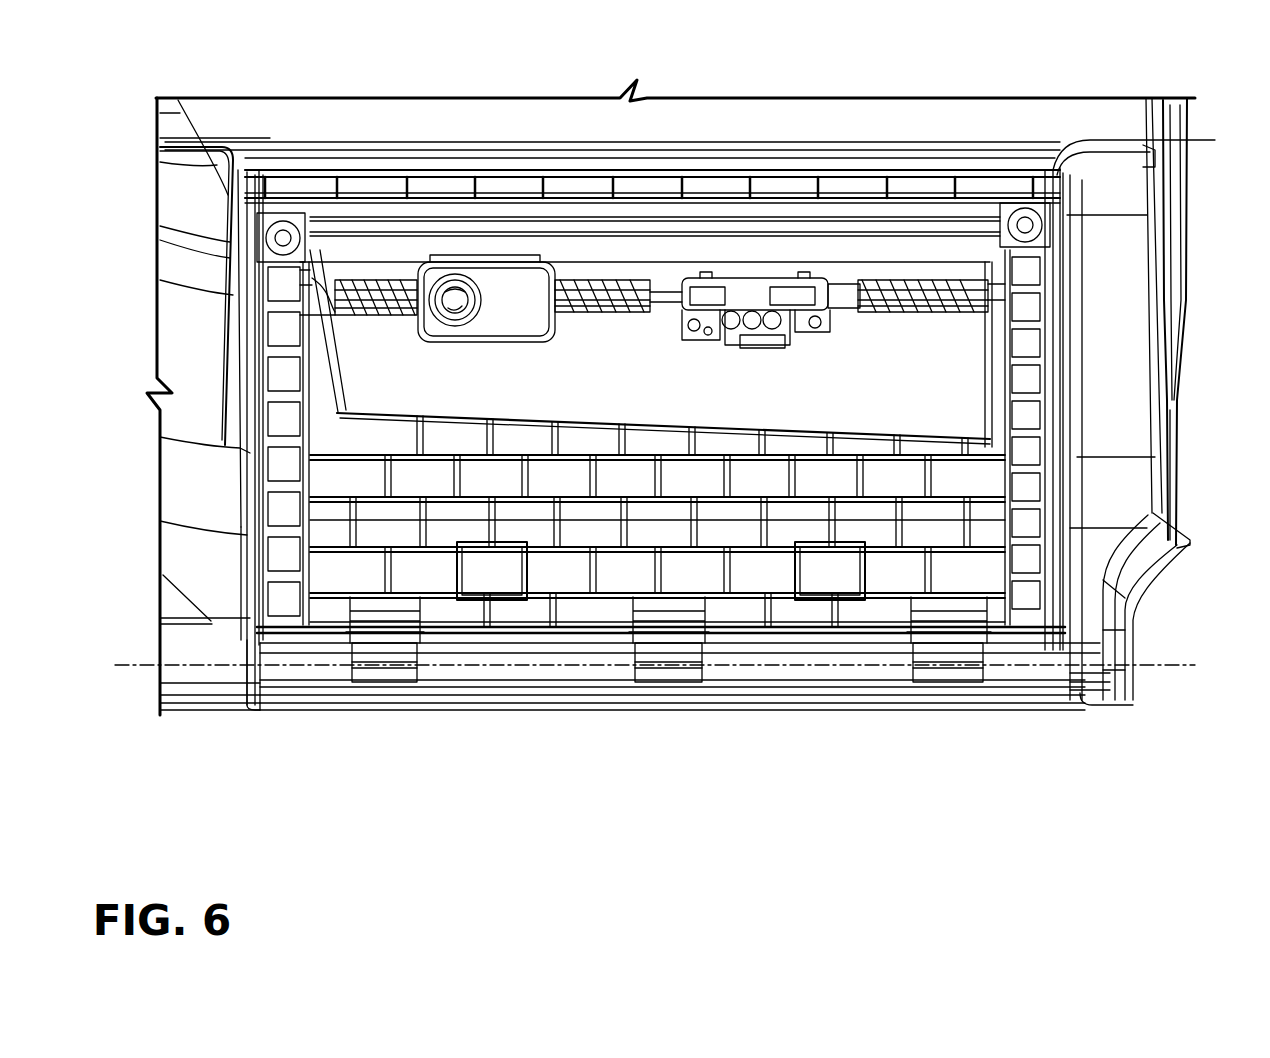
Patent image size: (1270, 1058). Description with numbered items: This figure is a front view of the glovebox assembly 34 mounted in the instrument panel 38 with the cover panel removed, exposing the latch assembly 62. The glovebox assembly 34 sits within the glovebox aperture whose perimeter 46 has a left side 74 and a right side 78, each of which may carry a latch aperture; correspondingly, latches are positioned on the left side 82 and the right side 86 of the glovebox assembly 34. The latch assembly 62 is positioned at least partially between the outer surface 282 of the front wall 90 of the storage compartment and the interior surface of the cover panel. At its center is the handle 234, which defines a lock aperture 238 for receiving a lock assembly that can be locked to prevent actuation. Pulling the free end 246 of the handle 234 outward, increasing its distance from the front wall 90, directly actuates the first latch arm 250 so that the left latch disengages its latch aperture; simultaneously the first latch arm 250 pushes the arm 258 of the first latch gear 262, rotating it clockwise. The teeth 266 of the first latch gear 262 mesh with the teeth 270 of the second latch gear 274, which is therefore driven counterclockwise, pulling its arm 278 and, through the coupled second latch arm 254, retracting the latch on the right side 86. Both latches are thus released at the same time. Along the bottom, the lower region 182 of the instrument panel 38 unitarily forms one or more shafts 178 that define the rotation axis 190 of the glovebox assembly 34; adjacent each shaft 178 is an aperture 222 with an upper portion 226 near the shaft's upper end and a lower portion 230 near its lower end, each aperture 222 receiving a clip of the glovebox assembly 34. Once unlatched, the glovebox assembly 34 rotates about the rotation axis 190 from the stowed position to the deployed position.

The glovebox assembly 34 is at (1022, 552).
The instrument panel 38 is at (193, 257).
The perimeter 46 is at (212, 647).
The latch assembly 62 is at (643, 272).
The left side 74 is at (265, 394).
The right side 78 is at (1063, 407).
The left side 82 is at (256, 358).
The right side 86 is at (1060, 277).
The front wall 90 is at (390, 217).
The shaft 178 is at (358, 658).
The lower region 182 is at (541, 678).
The rotation axis 190 is at (1170, 663).
The aperture 222 is at (373, 688).
The upper portion 226 is at (398, 633).
The lower portion 230 is at (390, 677).
The handle 234 is at (515, 272).
The lock aperture 238 is at (463, 288).
The free end 246 is at (537, 292).
The first latch arm 250 is at (600, 272).
The second latch arm 254 is at (803, 293).
The arm 258 is at (740, 293).
The first latch gear 262 is at (760, 300).
The teeth 266 is at (775, 305).
The teeth 270 is at (953, 265).
The second latch gear 274 is at (1070, 413).
The arm 278 is at (790, 375).
The outer surface 282 is at (365, 478).